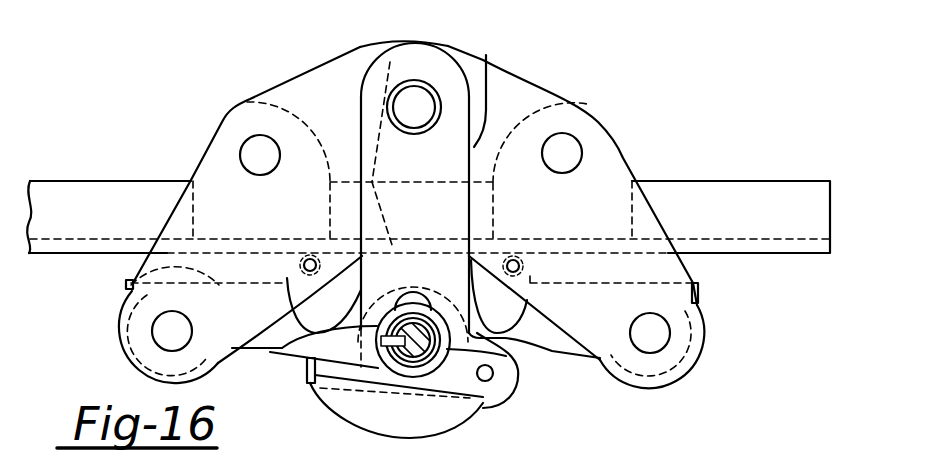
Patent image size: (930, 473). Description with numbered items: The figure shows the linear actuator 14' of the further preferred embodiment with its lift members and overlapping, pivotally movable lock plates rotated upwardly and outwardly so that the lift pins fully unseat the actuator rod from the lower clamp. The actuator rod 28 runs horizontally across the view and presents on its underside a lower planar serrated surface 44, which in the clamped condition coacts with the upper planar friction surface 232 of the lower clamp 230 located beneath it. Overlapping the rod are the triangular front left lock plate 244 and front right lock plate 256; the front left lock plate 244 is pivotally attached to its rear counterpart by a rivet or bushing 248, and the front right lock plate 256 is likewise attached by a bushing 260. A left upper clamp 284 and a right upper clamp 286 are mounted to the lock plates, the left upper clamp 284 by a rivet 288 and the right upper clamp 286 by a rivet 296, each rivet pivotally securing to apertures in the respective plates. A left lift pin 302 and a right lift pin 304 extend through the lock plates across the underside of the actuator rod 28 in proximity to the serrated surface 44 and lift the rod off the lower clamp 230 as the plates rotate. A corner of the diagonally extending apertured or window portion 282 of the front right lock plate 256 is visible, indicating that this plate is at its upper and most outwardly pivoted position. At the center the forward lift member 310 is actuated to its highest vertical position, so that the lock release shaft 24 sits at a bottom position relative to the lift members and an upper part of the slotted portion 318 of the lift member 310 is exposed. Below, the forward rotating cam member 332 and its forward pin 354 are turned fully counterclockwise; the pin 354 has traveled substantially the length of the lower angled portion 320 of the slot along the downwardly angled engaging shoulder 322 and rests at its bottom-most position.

The linear actuator 14' is at (324, 25).
The actuator rod 28 is at (90, 181).
The lower planar serrated surface 44 is at (99, 256).
The front left lock plate 244 is at (306, 70).
The front right lock plate 256 is at (523, 79).
The left upper clamp 284 is at (200, 175).
The right upper clamp 286 is at (583, 122).
The rivet 288 is at (253, 155).
The rivet 296 is at (577, 155).
The forward lift member 310 is at (430, 67).
The second diagonally extending apertured portion 282 is at (486, 55).
The slotted portion 318 is at (413, 291).
The left lift pin 302 is at (305, 268).
The right lift pin 304 is at (514, 262).
The upper planar friction surface 232 is at (127, 284).
The lower clamp 230 is at (117, 314).
The rivet or bushing 248 is at (160, 334).
The bushing 260 is at (653, 342).
The lock release shaft 24 is at (293, 351).
The downwardly angled engaging shoulder 322 is at (538, 350).
The forward pin 354 is at (484, 384).
The forward rotating cam member 332 is at (440, 386).
The lower angled portion 320 is at (466, 368).